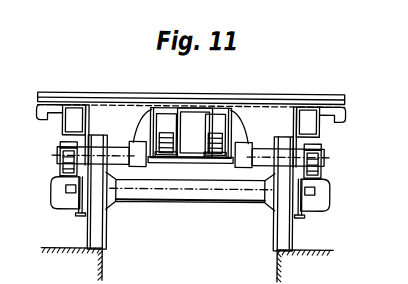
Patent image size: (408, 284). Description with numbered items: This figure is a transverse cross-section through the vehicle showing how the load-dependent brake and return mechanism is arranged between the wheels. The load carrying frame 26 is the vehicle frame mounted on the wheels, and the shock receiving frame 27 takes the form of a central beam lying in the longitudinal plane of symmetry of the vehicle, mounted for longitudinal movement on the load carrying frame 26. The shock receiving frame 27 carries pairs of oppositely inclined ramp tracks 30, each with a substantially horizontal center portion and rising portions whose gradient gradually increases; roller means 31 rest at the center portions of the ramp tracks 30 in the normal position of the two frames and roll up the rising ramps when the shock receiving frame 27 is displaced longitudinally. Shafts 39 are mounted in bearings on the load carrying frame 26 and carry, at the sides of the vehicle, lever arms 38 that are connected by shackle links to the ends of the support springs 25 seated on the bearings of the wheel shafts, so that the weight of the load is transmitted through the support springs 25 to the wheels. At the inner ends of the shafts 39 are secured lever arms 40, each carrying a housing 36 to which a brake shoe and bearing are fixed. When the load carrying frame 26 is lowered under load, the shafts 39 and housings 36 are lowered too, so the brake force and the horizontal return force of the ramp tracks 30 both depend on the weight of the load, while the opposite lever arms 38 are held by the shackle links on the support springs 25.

The support spring 25 is at (64, 162).
The load carrying frame 26 is at (290, 101).
The shock receiving frame 27 is at (190, 137).
The ramp track 30 is at (162, 157).
The roller means 31 is at (165, 133).
The housing 36 is at (172, 117).
The lever arm 38 is at (63, 147).
The shaft 39 is at (118, 150).
The lever arm 40 is at (141, 127).